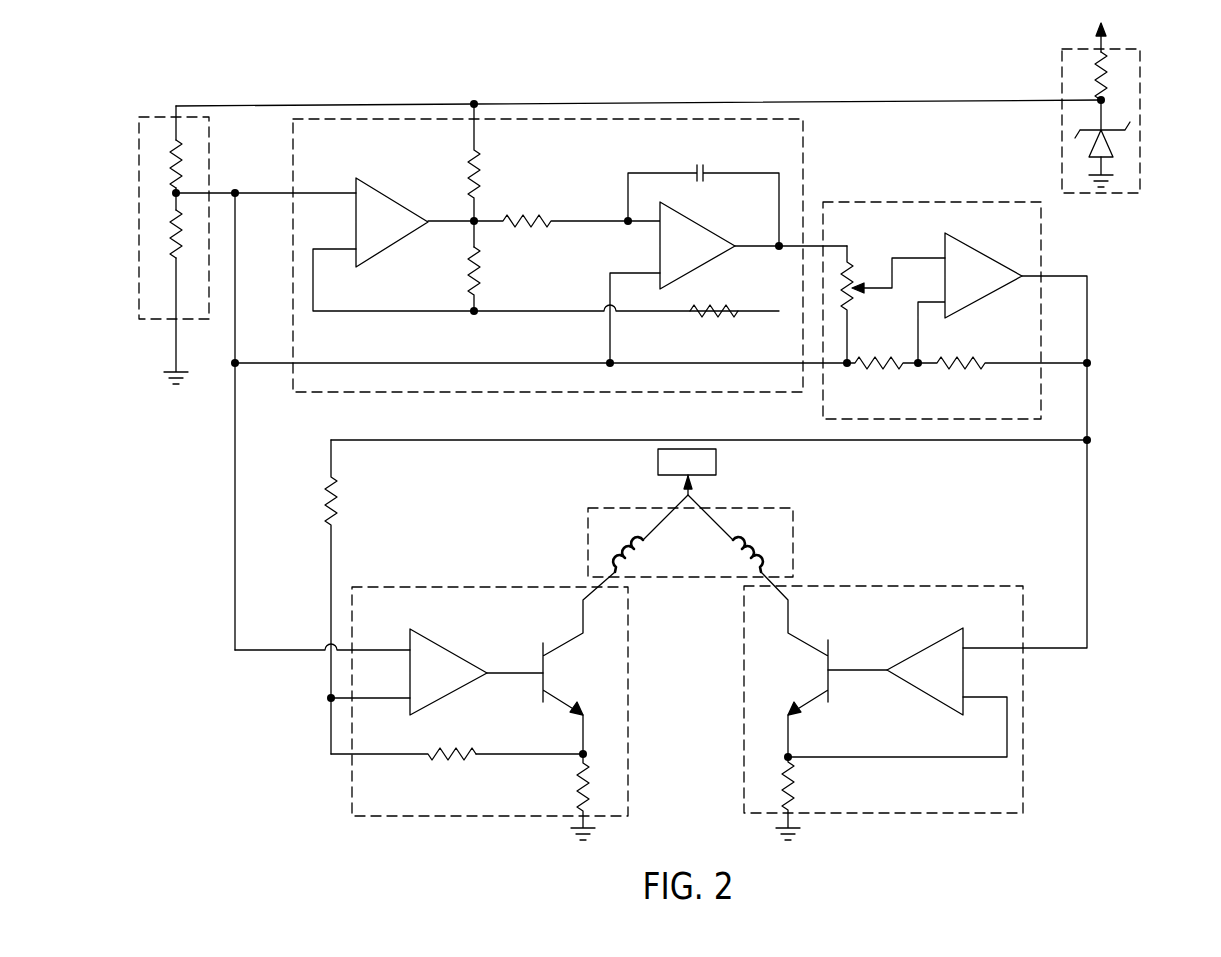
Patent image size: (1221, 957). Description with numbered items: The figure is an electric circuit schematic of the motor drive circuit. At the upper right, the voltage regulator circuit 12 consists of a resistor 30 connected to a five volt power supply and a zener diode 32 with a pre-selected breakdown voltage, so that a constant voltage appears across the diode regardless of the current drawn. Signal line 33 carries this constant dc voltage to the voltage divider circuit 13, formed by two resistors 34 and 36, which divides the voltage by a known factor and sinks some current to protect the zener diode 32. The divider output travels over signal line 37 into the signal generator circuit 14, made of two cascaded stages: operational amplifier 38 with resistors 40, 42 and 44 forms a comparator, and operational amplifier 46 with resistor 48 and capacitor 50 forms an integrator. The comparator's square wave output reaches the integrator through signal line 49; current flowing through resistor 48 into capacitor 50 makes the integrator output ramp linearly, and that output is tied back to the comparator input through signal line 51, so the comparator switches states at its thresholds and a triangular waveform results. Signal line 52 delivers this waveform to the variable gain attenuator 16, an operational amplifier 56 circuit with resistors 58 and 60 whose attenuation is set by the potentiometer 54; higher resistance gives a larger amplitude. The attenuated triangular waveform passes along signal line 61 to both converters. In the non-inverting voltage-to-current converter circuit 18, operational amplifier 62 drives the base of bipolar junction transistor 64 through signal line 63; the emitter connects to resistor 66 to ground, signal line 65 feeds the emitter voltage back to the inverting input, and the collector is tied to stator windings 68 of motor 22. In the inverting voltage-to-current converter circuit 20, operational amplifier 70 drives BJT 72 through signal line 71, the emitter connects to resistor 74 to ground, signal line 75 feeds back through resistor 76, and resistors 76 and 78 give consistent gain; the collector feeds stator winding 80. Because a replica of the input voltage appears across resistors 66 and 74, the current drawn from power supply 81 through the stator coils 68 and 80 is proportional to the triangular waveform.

The voltage regulator circuit 12 is at (1140, 85).
The voltage divider circuit 13 is at (145, 117).
The signal generator circuit 14 is at (634, 119).
The variable gain attenuator 16 is at (892, 202).
The non-inverting voltage-to-current converter circuit 18 is at (975, 586).
The inverting voltage-to-current converter circuit 20 is at (393, 587).
The motor 22 is at (793, 512).
The resistor 30 is at (1097, 65).
The zener diode 32 is at (1115, 145).
The signal line 33 is at (985, 102).
The resistor 34 is at (170, 155).
The resistor 36 is at (170, 232).
The signal line 37 is at (257, 193).
The operational amplifier 38 is at (397, 200).
The resistor 40 is at (706, 318).
The resistor 42 is at (472, 262).
The resistor 44 is at (476, 168).
The operational amplifier 46 is at (708, 227).
The resistor 48 is at (530, 227).
The signal line 49 is at (493, 220).
The capacitor 50 is at (708, 168).
The signal line 51 is at (561, 309).
The signal line 52 is at (747, 248).
The potentiometer 54 is at (846, 271).
The operational amplifier 56 is at (990, 252).
The resistor 58 is at (878, 353).
The resistor 60 is at (977, 367).
The signal line 61 is at (1072, 273).
The operational amplifier 62 is at (928, 645).
The signal line 63 is at (855, 673).
The bipolar junction transistor 64 is at (833, 647).
The signal line 65 is at (893, 756).
The resistor 66 is at (795, 793).
The stator windings 68 is at (762, 561).
The operational amplifier 70 is at (444, 702).
The signal line 71 is at (508, 676).
The bipolar junction transistor 72 is at (565, 645).
The resistor 74 is at (579, 779).
The signal line 75 is at (511, 757).
The resistor 76 is at (437, 758).
The resistor 78 is at (335, 507).
The stator winding 80 is at (612, 562).
The power supply 81 is at (716, 461).